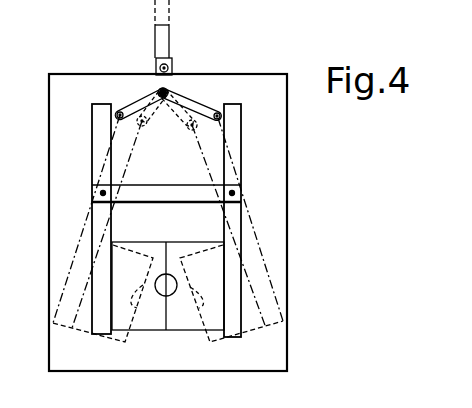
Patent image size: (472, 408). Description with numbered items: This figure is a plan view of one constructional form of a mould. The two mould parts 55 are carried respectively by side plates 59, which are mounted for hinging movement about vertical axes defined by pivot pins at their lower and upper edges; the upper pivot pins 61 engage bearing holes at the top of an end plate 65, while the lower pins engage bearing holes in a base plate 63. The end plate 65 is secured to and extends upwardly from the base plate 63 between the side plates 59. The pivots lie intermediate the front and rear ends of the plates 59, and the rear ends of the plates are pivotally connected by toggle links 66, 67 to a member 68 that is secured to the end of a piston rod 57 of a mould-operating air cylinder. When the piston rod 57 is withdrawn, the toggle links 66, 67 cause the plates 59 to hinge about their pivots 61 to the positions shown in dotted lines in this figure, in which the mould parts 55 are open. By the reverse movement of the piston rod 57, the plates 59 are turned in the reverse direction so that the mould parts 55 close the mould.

The mould parts 55 is at (200, 322).
The piston rod 57 is at (172, 20).
The side plates 59 is at (242, 145).
The pivot pins 61 is at (99, 193).
The base plate 63 is at (288, 190).
The end plate 65 is at (195, 189).
The toggle link 66 is at (137, 108).
The toggle link 67 is at (202, 104).
The member 68 is at (173, 68).